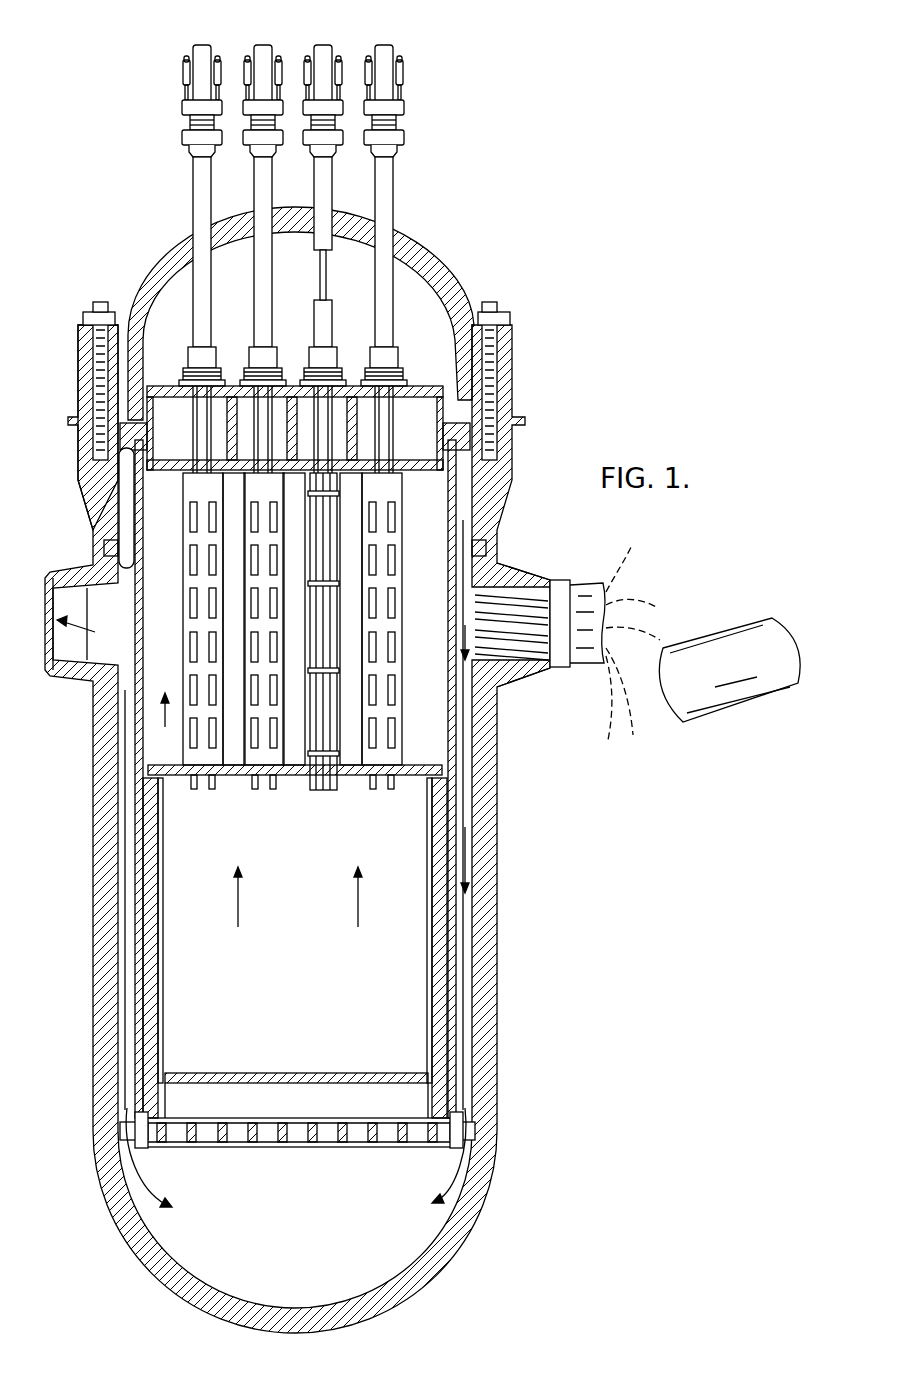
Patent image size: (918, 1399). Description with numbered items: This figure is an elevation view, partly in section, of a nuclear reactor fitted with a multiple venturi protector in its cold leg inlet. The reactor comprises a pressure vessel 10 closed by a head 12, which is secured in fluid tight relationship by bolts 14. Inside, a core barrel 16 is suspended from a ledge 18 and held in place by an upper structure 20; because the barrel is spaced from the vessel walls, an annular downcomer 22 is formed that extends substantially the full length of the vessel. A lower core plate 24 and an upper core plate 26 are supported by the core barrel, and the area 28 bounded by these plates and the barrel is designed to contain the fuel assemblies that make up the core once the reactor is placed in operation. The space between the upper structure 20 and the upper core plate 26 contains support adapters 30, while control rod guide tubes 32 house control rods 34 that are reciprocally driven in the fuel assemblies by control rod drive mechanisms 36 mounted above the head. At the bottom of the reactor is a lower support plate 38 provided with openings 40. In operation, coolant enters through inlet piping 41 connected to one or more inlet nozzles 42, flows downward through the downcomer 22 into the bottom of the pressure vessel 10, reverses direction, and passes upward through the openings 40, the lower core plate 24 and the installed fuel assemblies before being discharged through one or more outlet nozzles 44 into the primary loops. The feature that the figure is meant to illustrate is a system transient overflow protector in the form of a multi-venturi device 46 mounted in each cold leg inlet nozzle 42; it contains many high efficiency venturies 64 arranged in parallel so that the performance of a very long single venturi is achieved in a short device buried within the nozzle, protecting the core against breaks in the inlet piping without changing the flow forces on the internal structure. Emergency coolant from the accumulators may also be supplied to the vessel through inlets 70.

The pressure vessel 10 is at (497, 838).
The head 12 is at (437, 265).
The bolts 14 is at (78, 345).
The core barrel 16 is at (133, 531).
The ledge 18 is at (100, 474).
The upper structure 20 is at (148, 400).
The downcomer 22 is at (120, 708).
The lower core plate 24 is at (345, 1083).
The upper core plate 26 is at (247, 778).
The area 28 is at (307, 936).
The support adapters 30 is at (183, 607).
The control rod guide tubes 32 is at (300, 777).
The control rods 34 is at (320, 270).
The control rod drive mechanisms 36 is at (300, 72).
The lower support plate 38 is at (223, 1143).
The openings 40 is at (303, 1137).
The inlet piping 41 is at (712, 652).
The inlet nozzles 42 is at (530, 578).
The outlet nozzles 44 is at (60, 577).
The multi-venturi device 46 is at (565, 584).
The venturies 64 is at (530, 668).
The inlets 70 is at (104, 548).